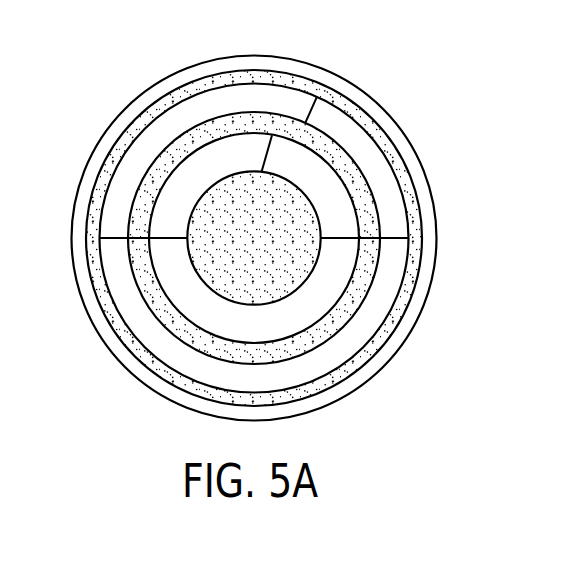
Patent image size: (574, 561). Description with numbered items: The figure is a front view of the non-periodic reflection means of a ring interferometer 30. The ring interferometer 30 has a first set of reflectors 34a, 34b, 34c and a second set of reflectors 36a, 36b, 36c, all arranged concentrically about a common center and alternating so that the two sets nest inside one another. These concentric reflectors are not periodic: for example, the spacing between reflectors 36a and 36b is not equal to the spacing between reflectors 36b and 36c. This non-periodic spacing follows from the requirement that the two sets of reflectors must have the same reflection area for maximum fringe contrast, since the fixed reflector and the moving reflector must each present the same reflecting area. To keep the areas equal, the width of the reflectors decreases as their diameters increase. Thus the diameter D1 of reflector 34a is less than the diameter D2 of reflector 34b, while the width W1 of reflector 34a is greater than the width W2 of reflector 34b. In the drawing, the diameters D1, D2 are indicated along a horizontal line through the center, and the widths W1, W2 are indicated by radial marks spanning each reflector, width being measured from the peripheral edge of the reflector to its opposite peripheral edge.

The ring interferometer 30 is at (255, 241).
The reflector 34a is at (172, 198).
The reflector 34b is at (133, 322).
The reflector 34c is at (155, 387).
The reflector 36a is at (293, 263).
The reflector 36b is at (363, 208).
The reflector 36c is at (375, 135).
The diameter of reflector 34a D1 is at (156, 239).
The diameter of reflector 34b D2 is at (101, 239).
The width of reflector 34a W1 is at (266, 152).
The width of reflector 34b W2 is at (311, 112).